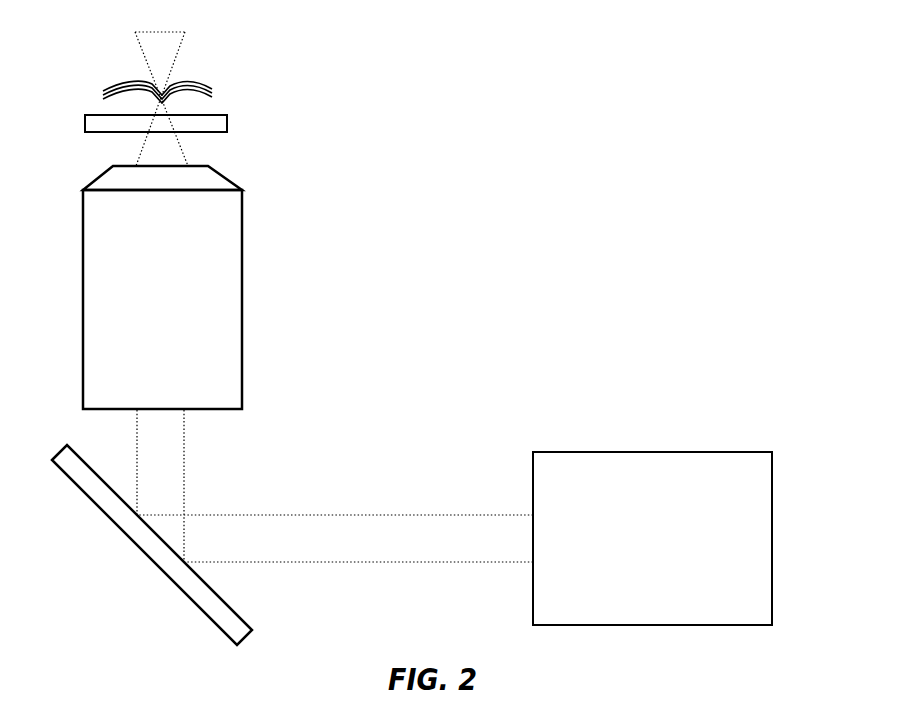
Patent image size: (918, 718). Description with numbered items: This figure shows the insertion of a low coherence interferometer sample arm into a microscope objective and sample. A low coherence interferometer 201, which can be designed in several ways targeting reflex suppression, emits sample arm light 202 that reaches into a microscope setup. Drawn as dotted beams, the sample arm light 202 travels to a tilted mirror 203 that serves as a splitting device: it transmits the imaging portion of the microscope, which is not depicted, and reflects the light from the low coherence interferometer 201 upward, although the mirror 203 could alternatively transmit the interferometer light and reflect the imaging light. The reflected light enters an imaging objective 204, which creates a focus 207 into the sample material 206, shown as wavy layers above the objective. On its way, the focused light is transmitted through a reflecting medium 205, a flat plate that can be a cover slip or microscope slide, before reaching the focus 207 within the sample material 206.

The low coherence interferometer 201 is at (757, 488).
The sample arm light 202 is at (375, 543).
The mirror 203 is at (150, 545).
The imaging objective 204 is at (195, 286).
The reflecting medium 205 is at (213, 122).
The sample material 206 is at (117, 82).
The focus 207 is at (163, 87).